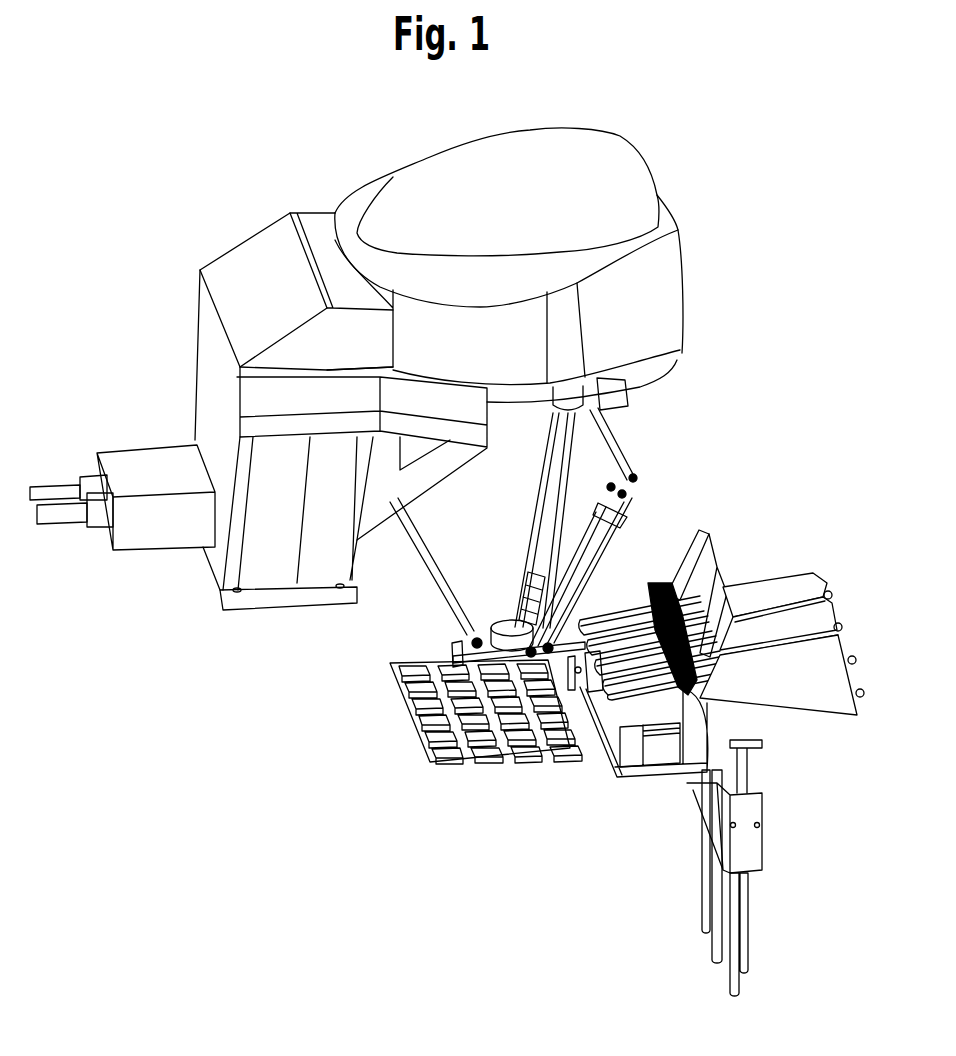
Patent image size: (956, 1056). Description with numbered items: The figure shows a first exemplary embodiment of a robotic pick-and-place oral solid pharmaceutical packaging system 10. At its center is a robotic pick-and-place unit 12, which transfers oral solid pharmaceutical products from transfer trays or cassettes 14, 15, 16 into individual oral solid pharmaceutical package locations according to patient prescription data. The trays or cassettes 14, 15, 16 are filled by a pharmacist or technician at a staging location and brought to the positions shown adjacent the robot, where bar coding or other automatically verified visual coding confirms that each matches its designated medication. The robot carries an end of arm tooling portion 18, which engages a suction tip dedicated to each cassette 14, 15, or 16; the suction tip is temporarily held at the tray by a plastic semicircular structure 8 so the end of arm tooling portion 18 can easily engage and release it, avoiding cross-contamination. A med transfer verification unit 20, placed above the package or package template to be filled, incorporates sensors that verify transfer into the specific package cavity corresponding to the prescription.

The robotic pick-and-place oral solid pharmaceutical packaging system 10 is at (246, 172).
The robotic pick-and-place unit 12 is at (600, 157).
The transfer tray or cassette 14 is at (805, 700).
The transfer tray or cassette 15 is at (765, 630).
The transfer tray or cassette 16 is at (785, 578).
The end of arm tooling portion 18 is at (468, 625).
The med transfer verification unit 20 is at (390, 687).
The plastic semicircular structure 8 is at (597, 725).